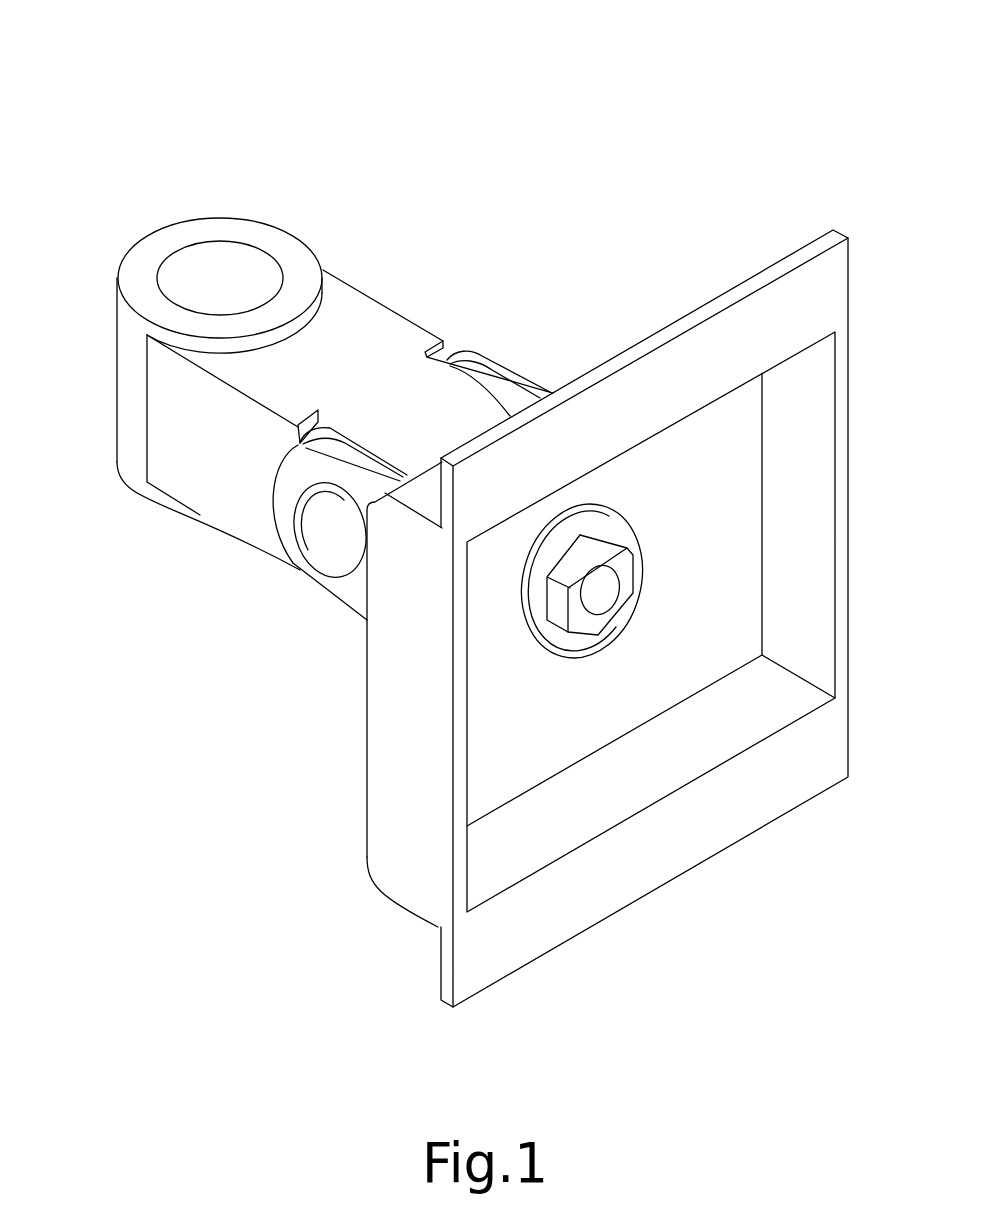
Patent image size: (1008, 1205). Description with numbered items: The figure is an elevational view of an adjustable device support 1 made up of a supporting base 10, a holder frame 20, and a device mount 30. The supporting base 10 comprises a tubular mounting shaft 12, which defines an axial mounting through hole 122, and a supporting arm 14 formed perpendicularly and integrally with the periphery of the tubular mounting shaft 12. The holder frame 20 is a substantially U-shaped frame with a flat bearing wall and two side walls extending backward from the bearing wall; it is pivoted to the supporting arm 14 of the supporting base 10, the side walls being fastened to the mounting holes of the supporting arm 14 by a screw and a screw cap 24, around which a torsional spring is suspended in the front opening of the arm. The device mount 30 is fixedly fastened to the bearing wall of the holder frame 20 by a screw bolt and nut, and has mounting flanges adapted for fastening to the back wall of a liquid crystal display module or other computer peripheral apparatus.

The adjustable device support 1 is at (374, 152).
The supporting base 10 is at (192, 210).
The tubular mounting shaft 12 is at (138, 270).
The axial mounting through hole 122 is at (242, 263).
The supporting arm 14 is at (382, 322).
The holder frame 20 is at (510, 343).
The screw cap 24 is at (338, 553).
The device mount 30 is at (813, 490).